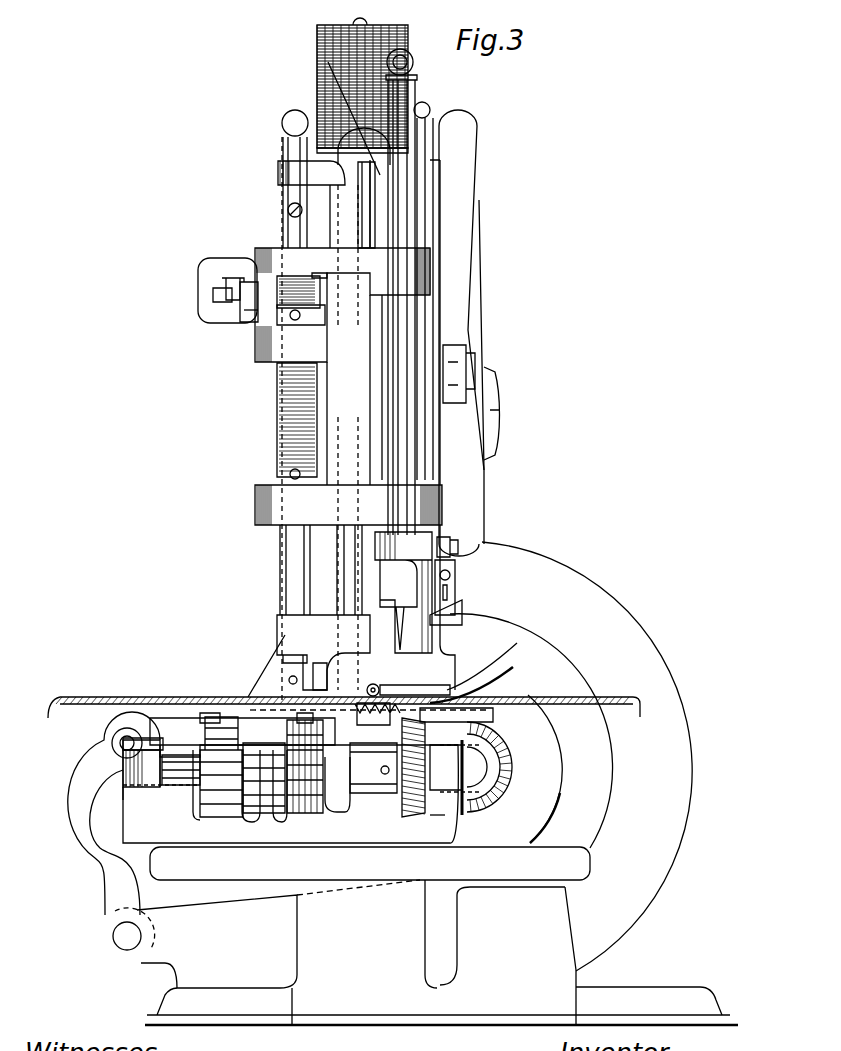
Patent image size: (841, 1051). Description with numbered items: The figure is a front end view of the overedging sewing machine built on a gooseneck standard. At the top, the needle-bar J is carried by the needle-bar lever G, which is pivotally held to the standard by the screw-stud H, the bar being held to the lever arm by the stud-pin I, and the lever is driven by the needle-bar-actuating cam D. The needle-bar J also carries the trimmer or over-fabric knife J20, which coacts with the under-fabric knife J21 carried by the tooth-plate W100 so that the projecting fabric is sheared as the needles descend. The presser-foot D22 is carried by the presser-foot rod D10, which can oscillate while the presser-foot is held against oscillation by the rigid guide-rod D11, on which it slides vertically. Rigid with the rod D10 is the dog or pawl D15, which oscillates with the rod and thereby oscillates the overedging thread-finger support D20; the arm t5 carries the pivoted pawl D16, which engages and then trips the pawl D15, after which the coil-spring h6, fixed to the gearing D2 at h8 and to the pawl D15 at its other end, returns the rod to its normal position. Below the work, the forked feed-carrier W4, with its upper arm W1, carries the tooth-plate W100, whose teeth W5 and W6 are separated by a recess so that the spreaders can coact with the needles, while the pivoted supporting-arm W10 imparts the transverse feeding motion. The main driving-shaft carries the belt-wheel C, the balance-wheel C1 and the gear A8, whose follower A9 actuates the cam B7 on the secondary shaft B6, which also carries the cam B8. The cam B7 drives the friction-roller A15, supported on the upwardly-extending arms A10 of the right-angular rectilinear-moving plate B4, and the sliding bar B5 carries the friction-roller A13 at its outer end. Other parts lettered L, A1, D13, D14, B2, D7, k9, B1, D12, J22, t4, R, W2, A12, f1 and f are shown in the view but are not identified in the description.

The needle-bar J is at (418, 104).
The lever handle L is at (478, 140).
The needle-bar carrying and actuating lever G is at (481, 333).
The stud-pin I is at (472, 364).
The screw-stud H is at (490, 392).
The frame standard A1 is at (441, 490).
The arm D13 is at (278, 170).
The rod D14 is at (360, 203).
The upper bracket B2 is at (257, 252).
The dog or pawl D15 is at (245, 308).
The stop D7 is at (226, 279).
The pawl or dog D16 is at (213, 294).
The arm t5 is at (246, 300).
The coil-spring h6 is at (320, 292).
The spring fixing point on gearing h8 is at (325, 278).
The block k9 is at (282, 320).
The lower bracket B1 is at (257, 500).
The spring D12 is at (280, 422).
The presser-foot rod D10 is at (292, 566).
The rigid guide-rod D11 is at (362, 558).
The presser-foot D22 is at (305, 632).
The tooth W6 is at (370, 684).
The overedging thread-finger support D20 is at (376, 684).
The gearing D2 is at (420, 682).
The bracket J22 is at (455, 585).
The slot t4 is at (448, 600).
The trimmer J20 is at (452, 612).
The coinciding knife J21 is at (490, 660).
The tooth W5 is at (450, 690).
The table R is at (120, 698).
The forked feed-carrier W4 is at (162, 737).
The tooth-plate W100 is at (248, 712).
The bracket W2 is at (376, 722).
The upper arm of feed-carrier W1 is at (560, 718).
The pivoted supporting-arm W10 is at (72, 822).
The bearing A12 is at (182, 772).
The friction-roller A13 is at (210, 815).
The rectilinear-moving sliding bar B5 is at (230, 780).
The cam B8 is at (252, 790).
The cam B7 is at (305, 790).
The friction-roller A15 is at (270, 815).
The right-angular-shaped rectilinear-moving plate B4 is at (332, 812).
The upwardly-extending arms A10 is at (386, 780).
The follower A9 is at (410, 815).
The gear A8 is at (512, 782).
The pin f1 is at (455, 826).
The needle-bar-actuating cam D is at (556, 774).
The belt-wheel C is at (614, 760).
The balance-wheel C1 is at (668, 855).
The secondary shaft B6 is at (165, 785).
The pin f is at (133, 822).